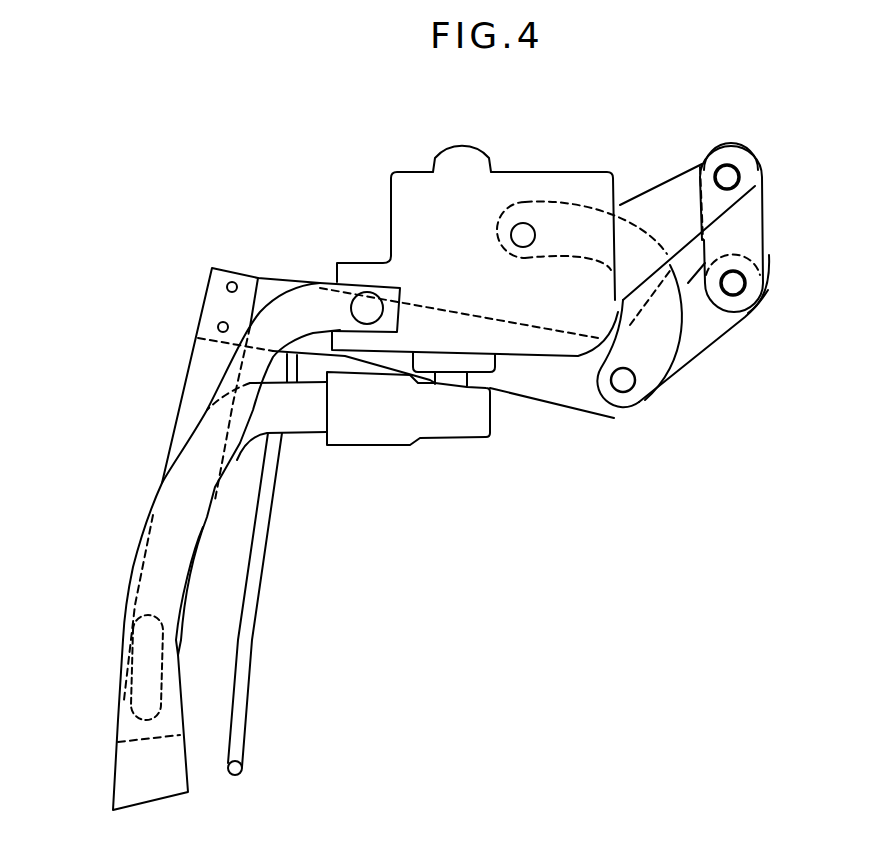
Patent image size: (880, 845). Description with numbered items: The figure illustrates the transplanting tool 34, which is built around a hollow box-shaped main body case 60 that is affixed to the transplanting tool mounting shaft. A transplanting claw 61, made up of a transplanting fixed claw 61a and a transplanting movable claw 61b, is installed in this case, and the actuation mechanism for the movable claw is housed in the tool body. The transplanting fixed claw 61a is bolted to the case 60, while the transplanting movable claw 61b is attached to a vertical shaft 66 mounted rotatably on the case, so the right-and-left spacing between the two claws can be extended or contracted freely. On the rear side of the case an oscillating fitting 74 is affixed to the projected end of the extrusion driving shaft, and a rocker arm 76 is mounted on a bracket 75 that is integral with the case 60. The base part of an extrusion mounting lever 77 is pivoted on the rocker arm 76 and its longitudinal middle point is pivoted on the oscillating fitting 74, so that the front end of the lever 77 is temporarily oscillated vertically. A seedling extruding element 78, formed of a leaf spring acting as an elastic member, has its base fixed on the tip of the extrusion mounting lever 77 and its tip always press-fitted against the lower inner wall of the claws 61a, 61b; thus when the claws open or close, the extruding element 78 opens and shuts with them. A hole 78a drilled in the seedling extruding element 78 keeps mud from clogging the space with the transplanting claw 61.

The transplanting tool 34 is at (364, 165).
The main body case 60 is at (390, 220).
The vertical shaft 66 is at (457, 383).
The transplanting claw 61 is at (107, 637).
The transplanting fixed claw 61a is at (137, 543).
The transplanting movable claw 61b is at (305, 417).
The seedling extruding element 78 is at (207, 368).
The hole 78a is at (125, 702).
The oscillating fitting 74 is at (660, 345).
The bracket 75 is at (687, 183).
The rocker arm 76 is at (748, 229).
The extrusion mounting lever 77 is at (587, 393).